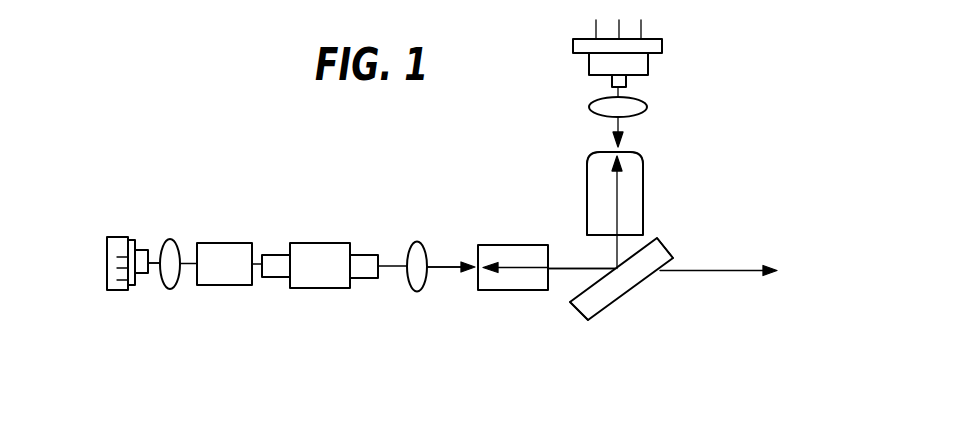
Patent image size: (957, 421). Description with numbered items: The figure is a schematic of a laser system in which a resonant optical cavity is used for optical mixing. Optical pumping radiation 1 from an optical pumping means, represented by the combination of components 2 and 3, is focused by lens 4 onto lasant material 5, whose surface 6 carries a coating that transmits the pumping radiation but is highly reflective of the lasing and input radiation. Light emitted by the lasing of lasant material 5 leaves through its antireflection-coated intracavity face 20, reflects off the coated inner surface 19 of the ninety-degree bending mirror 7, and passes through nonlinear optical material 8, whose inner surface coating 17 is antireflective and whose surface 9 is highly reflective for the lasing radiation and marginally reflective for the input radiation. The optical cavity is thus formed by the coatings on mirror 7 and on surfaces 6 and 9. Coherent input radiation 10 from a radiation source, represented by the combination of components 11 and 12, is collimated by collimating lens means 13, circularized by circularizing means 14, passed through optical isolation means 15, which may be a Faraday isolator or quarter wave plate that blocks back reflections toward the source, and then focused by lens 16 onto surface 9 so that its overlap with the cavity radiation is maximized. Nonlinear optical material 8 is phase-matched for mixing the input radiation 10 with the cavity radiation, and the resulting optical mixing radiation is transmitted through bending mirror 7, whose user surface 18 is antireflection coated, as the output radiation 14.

The optical pumping radiation 1 is at (626, 88).
The optical pumping means component 2 is at (650, 47).
The optical pumping means component 3 is at (612, 83).
The lens 4 is at (623, 108).
The lasant material 5 is at (617, 198).
The surface 6 is at (600, 153).
The 90-degree bending mirror 7 is at (643, 272).
The nonlinear optical material 8 is at (508, 292).
The surface 9 is at (477, 248).
The coherent input radiation 10 is at (153, 266).
The radiation source component 11 is at (107, 263).
The radiation source component 12 is at (142, 252).
The collimating lens means 13 is at (171, 279).
The circularizing means 14 is at (232, 243).
The optical isolation means 15 is at (320, 243).
The focusing lens 16 is at (418, 292).
The inner surface coating 17 is at (552, 279).
The user surface 18 is at (603, 313).
The inner surface 19 is at (652, 239).
The intracavity face 20 is at (587, 233).